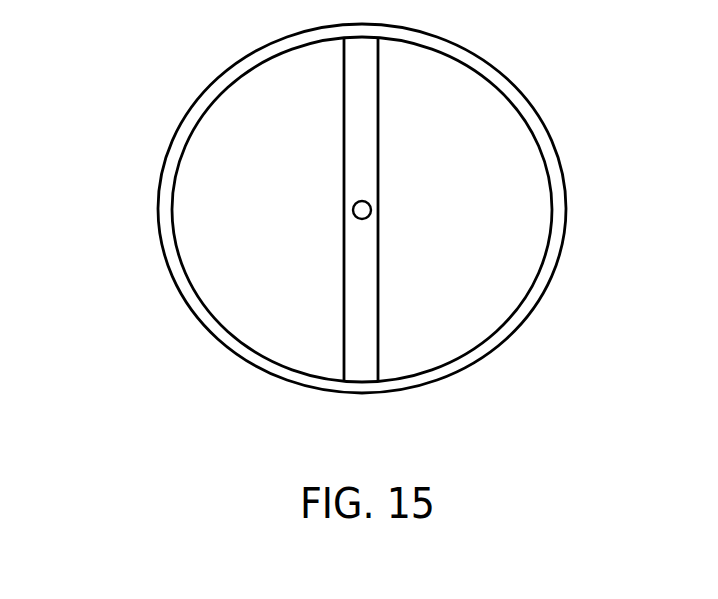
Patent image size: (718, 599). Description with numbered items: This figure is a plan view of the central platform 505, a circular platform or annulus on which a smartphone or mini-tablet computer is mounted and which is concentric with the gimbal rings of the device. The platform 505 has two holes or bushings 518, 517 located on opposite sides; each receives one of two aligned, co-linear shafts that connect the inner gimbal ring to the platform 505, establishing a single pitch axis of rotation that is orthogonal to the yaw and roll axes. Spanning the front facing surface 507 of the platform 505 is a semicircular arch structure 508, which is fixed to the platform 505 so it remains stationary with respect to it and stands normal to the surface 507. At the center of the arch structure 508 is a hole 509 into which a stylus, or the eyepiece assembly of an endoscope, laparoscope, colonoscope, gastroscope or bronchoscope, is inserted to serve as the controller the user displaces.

The central platform 505 is at (548, 318).
The hole or bushing 517 is at (580, 207).
The hole or bushing 518 is at (144, 211).
The semicircular arch structure 508 is at (330, 129).
The hole 509 is at (339, 225).
The front facing surface 507 is at (307, 229).